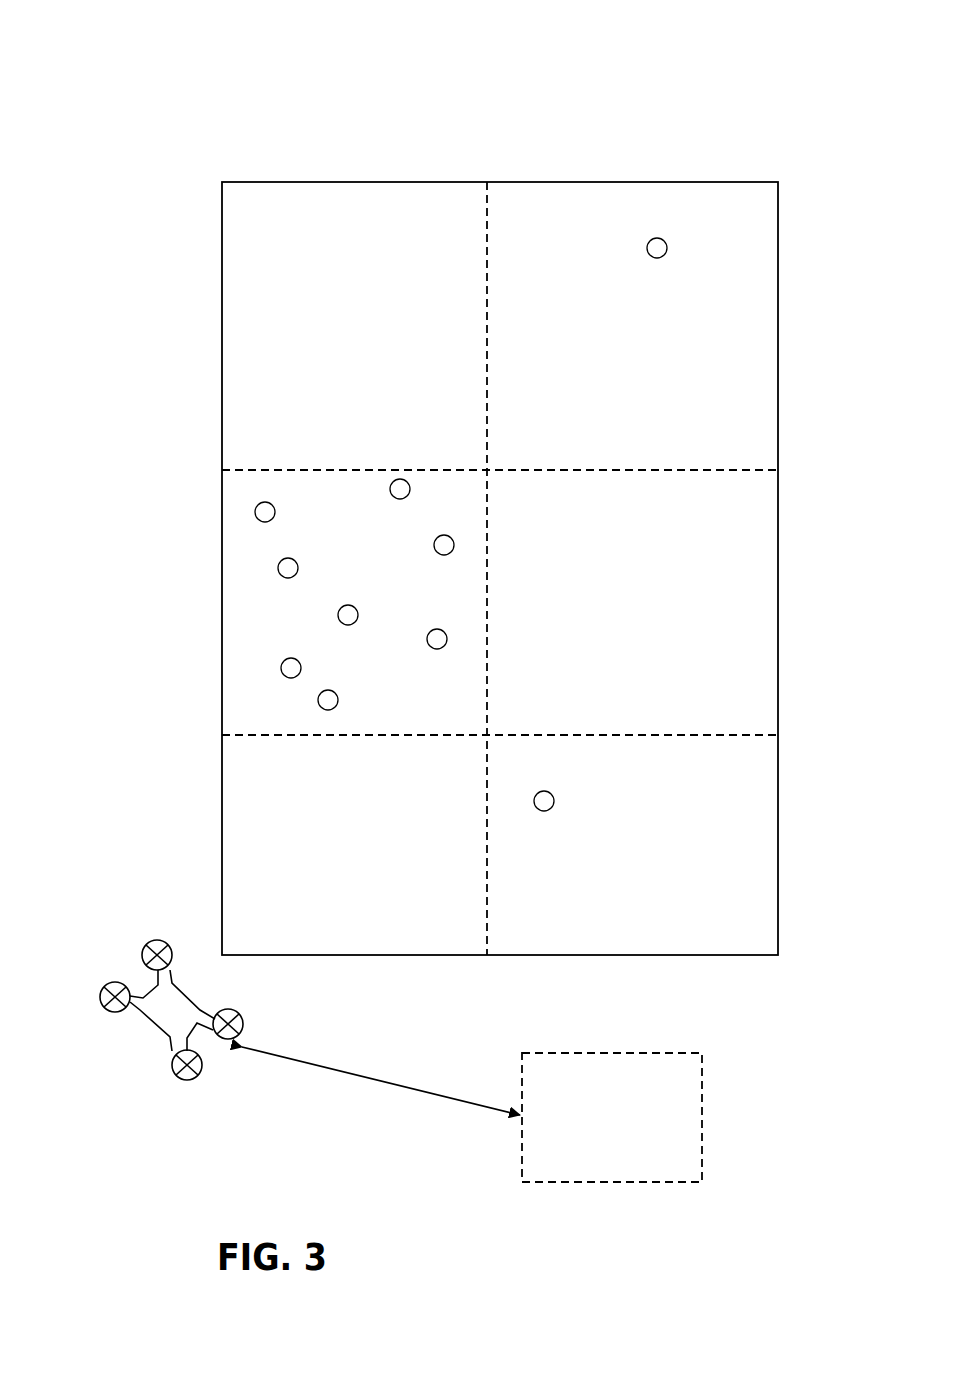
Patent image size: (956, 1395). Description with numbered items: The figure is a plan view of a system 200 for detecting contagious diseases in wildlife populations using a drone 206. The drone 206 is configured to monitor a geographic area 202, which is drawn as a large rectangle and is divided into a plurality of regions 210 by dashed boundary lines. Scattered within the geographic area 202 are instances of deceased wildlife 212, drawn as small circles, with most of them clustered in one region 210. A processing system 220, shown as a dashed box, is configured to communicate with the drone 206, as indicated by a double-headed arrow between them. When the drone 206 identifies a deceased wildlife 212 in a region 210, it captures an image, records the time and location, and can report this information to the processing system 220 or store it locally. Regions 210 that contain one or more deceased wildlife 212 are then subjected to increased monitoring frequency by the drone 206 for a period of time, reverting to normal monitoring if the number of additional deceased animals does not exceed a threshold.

The system 200 is at (752, 72).
The geographic area 202 is at (780, 178).
The drone 206 is at (140, 1010).
The region 210 is at (566, 182).
The deceased wildlife 212 is at (647, 252).
The processing system 220 is at (472, 1114).